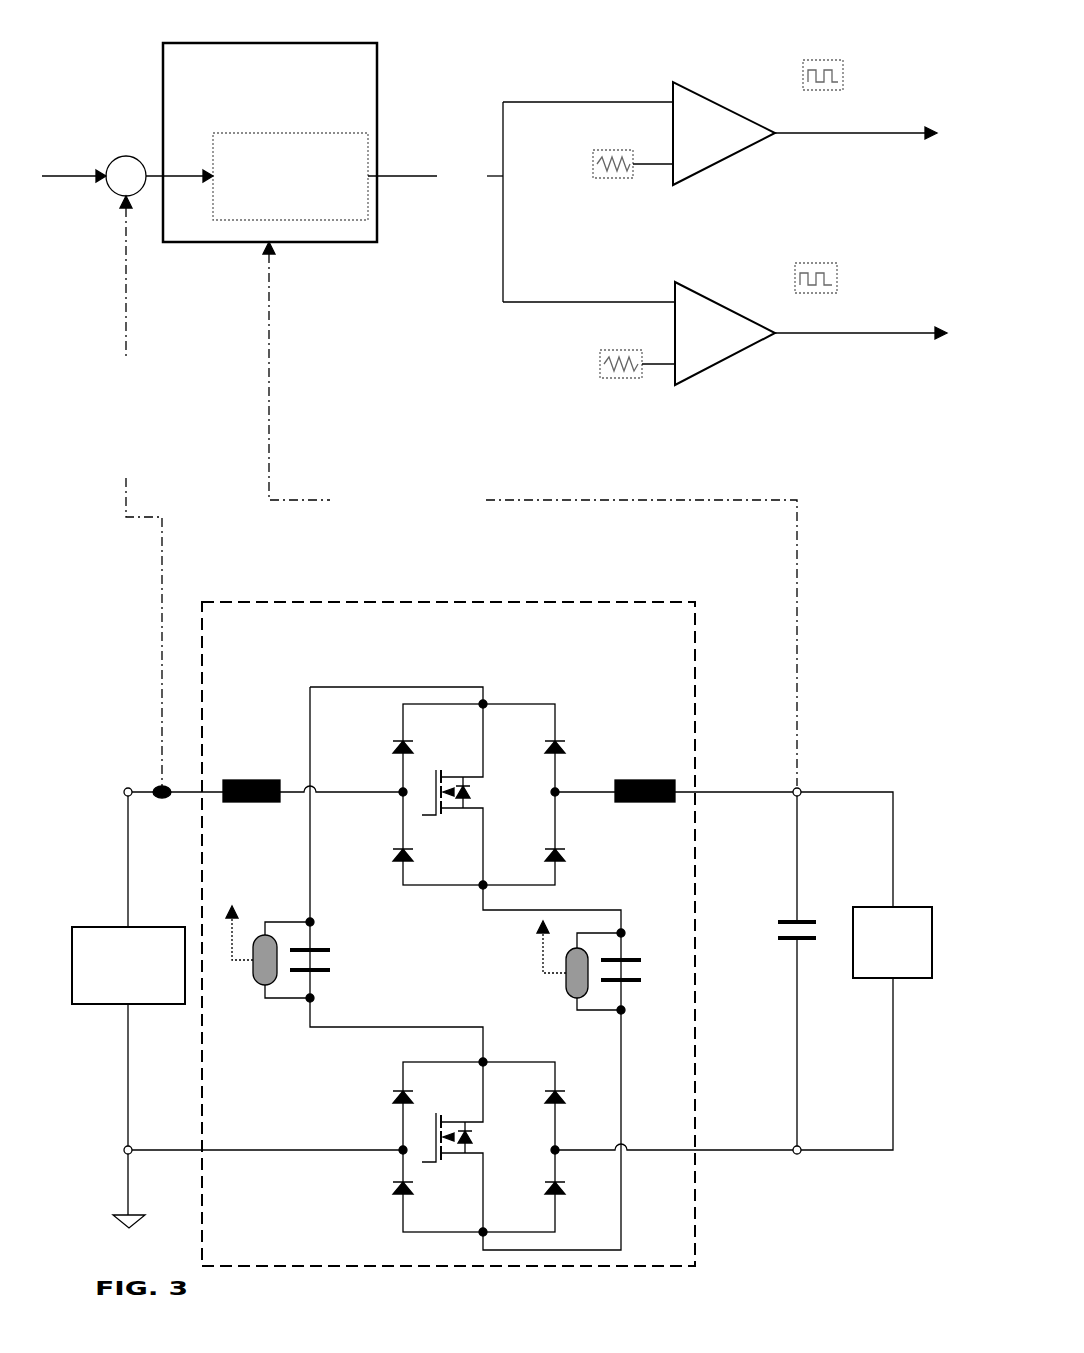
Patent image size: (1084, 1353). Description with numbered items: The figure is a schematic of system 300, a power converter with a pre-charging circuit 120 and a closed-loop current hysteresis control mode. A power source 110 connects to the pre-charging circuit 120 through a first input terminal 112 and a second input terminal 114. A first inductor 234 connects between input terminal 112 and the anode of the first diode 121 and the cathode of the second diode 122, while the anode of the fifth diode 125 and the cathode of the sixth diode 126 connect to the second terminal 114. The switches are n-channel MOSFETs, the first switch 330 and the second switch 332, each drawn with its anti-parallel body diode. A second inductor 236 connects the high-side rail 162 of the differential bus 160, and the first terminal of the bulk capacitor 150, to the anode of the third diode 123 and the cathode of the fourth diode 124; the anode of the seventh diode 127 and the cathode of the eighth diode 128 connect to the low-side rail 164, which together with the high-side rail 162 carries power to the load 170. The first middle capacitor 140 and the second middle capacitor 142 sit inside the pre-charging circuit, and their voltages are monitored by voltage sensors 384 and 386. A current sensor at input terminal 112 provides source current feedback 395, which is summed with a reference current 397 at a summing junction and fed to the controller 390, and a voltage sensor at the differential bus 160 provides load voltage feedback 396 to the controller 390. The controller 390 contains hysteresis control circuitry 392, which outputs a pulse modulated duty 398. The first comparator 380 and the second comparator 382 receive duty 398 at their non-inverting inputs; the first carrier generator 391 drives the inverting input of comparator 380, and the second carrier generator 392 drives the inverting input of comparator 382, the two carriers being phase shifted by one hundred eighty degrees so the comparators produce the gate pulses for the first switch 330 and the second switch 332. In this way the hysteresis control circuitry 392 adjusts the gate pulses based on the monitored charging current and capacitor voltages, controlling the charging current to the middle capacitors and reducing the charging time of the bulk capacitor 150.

The system 300 is at (125, 50).
The controller 390 is at (288, 103).
The hysteresis control circuitry 392 is at (306, 215).
The reference current Iref 397 is at (85, 243).
The source current feedback signal 395 is at (135, 471).
The load voltage feedback signal 396 is at (422, 540).
The duty 398 is at (478, 200).
The carrier 1 391 is at (590, 233).
The comparator 380 is at (805, 122).
The comparator 382 is at (811, 324).
The pre-charging circuit 120 is at (468, 660).
The input terminal 112 is at (127, 788).
The input terminal 114 is at (126, 1154).
The power source 110 is at (149, 979).
The inductor L1 234 is at (268, 781).
The inductor L2 236 is at (662, 790).
The n-channel MOSFET S1 330 is at (523, 821).
The n-channel MOSFET S2 332 is at (528, 1160).
The diode D1 121 is at (388, 775).
The diode D2 122 is at (392, 878).
The diode D3 123 is at (602, 768).
The diode D4 124 is at (598, 878).
The diode D5 125 is at (392, 1121).
The diode D6 126 is at (387, 1213).
The diode D7 127 is at (600, 1118).
The diode D8 128 is at (600, 1213).
The middle capacitor C2 142 is at (407, 988).
The middle capacitor C1 140 is at (685, 993).
The voltage sensor 384 is at (266, 952).
The voltage sensor 386 is at (576, 965).
The bulk capacitor 150 is at (760, 945).
The differential bus 160 is at (866, 790).
The high-side rail 162 is at (801, 796).
The low-side rail 164 is at (800, 1146).
The load 170 is at (910, 963).